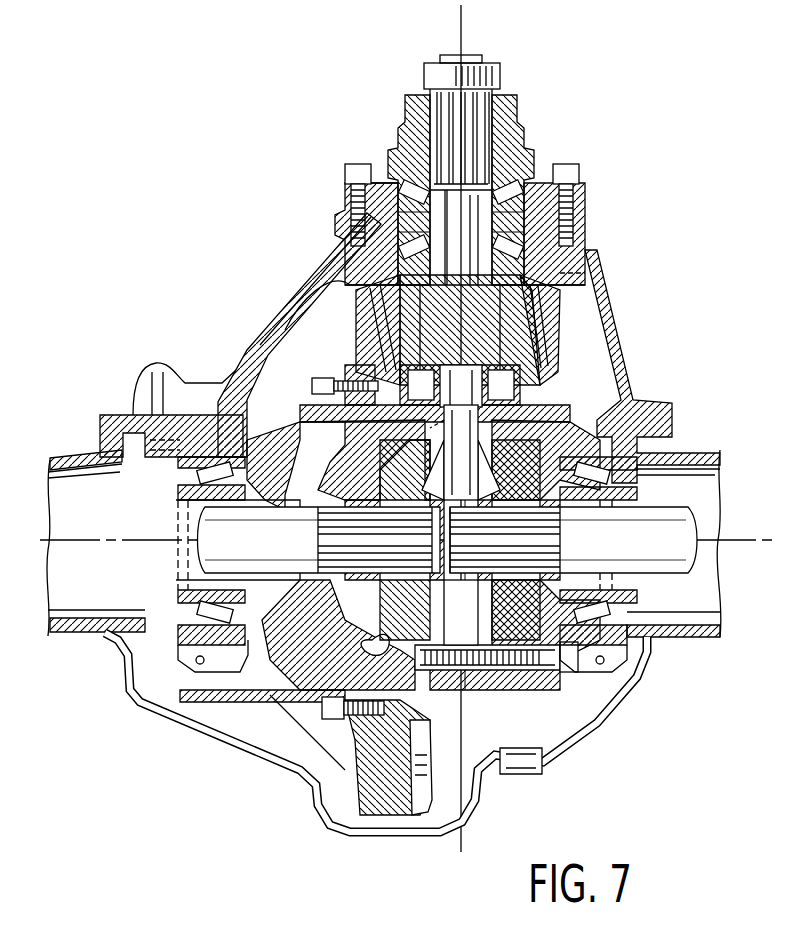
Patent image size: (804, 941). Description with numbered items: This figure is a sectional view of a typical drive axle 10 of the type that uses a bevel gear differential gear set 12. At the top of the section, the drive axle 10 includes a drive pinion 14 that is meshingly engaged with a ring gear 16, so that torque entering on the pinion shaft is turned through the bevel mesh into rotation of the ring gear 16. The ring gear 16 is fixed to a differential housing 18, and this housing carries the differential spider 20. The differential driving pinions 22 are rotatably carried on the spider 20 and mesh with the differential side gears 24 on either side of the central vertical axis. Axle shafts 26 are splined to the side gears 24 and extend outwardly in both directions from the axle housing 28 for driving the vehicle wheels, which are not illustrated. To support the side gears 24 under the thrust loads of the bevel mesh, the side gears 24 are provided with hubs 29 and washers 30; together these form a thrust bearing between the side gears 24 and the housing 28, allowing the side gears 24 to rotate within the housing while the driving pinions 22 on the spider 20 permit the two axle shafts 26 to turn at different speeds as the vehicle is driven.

The drive axle 10 is at (252, 232).
The bevel gear differential gear set 12 is at (530, 696).
The drive pinion 14 is at (473, 201).
The ring gear 16 is at (366, 312).
The differential housing 18 is at (320, 697).
The differential spider 20 is at (468, 423).
The differential driving pinions 22 is at (480, 437).
The differential side gears 24 is at (552, 513).
The axle shafts 26 is at (210, 553).
The axle housing 28 is at (251, 352).
The hubs 29 is at (370, 490).
The washers 30 is at (381, 476).